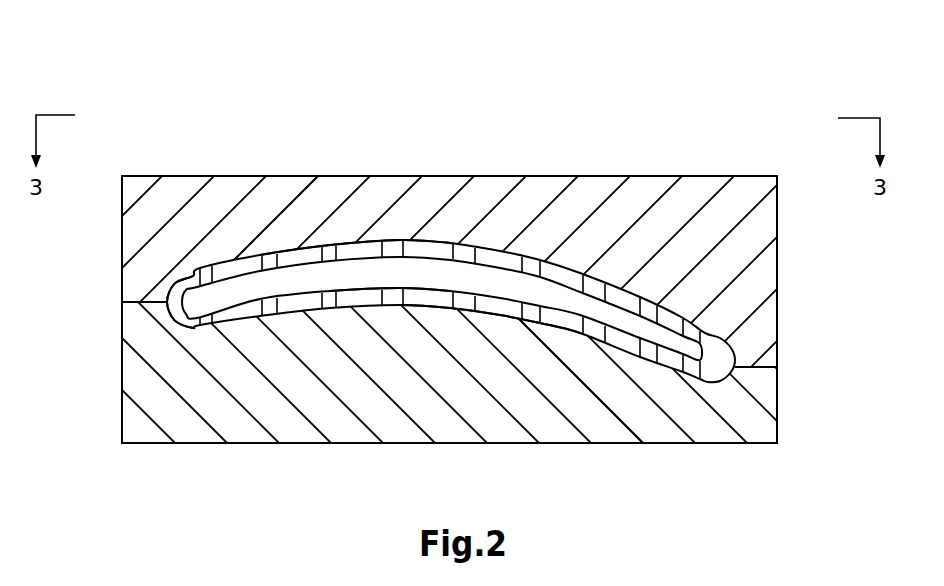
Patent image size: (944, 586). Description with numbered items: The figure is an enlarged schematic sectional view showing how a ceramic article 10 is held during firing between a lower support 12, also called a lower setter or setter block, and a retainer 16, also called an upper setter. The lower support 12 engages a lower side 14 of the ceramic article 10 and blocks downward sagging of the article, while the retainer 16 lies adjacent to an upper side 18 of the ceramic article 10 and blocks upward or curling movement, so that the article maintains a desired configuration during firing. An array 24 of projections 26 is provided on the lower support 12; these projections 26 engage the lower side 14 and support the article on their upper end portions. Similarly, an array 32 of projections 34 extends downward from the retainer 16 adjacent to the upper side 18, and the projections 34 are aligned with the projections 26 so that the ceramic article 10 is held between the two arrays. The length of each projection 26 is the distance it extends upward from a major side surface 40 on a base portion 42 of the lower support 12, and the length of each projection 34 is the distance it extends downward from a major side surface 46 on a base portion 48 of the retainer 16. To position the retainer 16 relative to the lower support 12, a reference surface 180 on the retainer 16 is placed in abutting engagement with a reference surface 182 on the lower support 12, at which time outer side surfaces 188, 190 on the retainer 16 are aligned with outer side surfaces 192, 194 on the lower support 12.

The ceramic article 10 is at (382, 276).
The lower support 12 is at (790, 430).
The lower side 14 is at (494, 318).
The retainer 16 is at (718, 170).
The upper side 18 is at (505, 262).
The array of projections 24 is at (166, 330).
The projections 26 is at (330, 310).
The array of projections 32 is at (166, 279).
The projections 34 is at (328, 247).
The major side surface 40 is at (418, 310).
The base portion 42 is at (562, 396).
The major side surface 46 is at (372, 242).
The base portion 48 is at (340, 208).
The reference surface 180 is at (130, 300).
The reference surface 182 is at (133, 318).
The outer side surface 188 is at (123, 222).
The outer side surface 190 is at (779, 261).
The outer side surface 192 is at (120, 430).
The outer side surface 194 is at (779, 404).